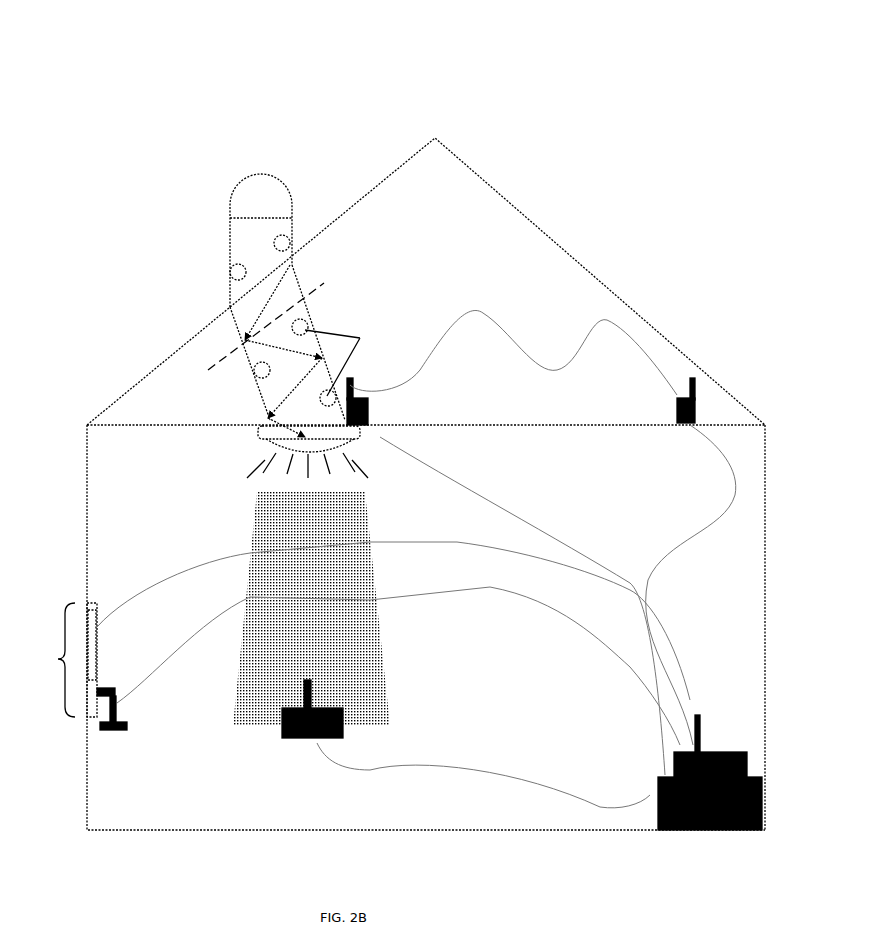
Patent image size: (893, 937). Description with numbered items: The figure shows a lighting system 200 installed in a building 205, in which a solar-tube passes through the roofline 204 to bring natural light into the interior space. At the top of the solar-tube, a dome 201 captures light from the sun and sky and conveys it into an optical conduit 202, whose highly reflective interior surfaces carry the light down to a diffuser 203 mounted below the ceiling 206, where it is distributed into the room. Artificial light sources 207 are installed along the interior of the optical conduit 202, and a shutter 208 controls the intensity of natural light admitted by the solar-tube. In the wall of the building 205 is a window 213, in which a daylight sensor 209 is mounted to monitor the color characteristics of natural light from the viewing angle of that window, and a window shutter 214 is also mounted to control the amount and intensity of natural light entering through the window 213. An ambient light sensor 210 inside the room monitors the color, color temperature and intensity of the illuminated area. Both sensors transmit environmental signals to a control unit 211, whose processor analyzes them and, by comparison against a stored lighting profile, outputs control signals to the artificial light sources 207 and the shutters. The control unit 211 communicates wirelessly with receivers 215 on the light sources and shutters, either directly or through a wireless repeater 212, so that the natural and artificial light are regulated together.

The lighting system 200 is at (352, 120).
The dome 201 is at (252, 176).
The optical conduit 202 is at (296, 281).
The diffuser 203 is at (358, 434).
The roofline 204 is at (575, 258).
The building 205 is at (766, 590).
The ceiling 206 is at (593, 428).
The artificial light source 207 is at (347, 363).
The shutter 208 is at (324, 283).
The daylight sensor 209 is at (111, 731).
The ambient light sensor 210 is at (300, 740).
The control unit 211 is at (735, 752).
The wireless repeater 212 is at (696, 406).
The window 213 is at (63, 660).
The window shutter 214 is at (91, 614).
The receiver 215 is at (353, 383).